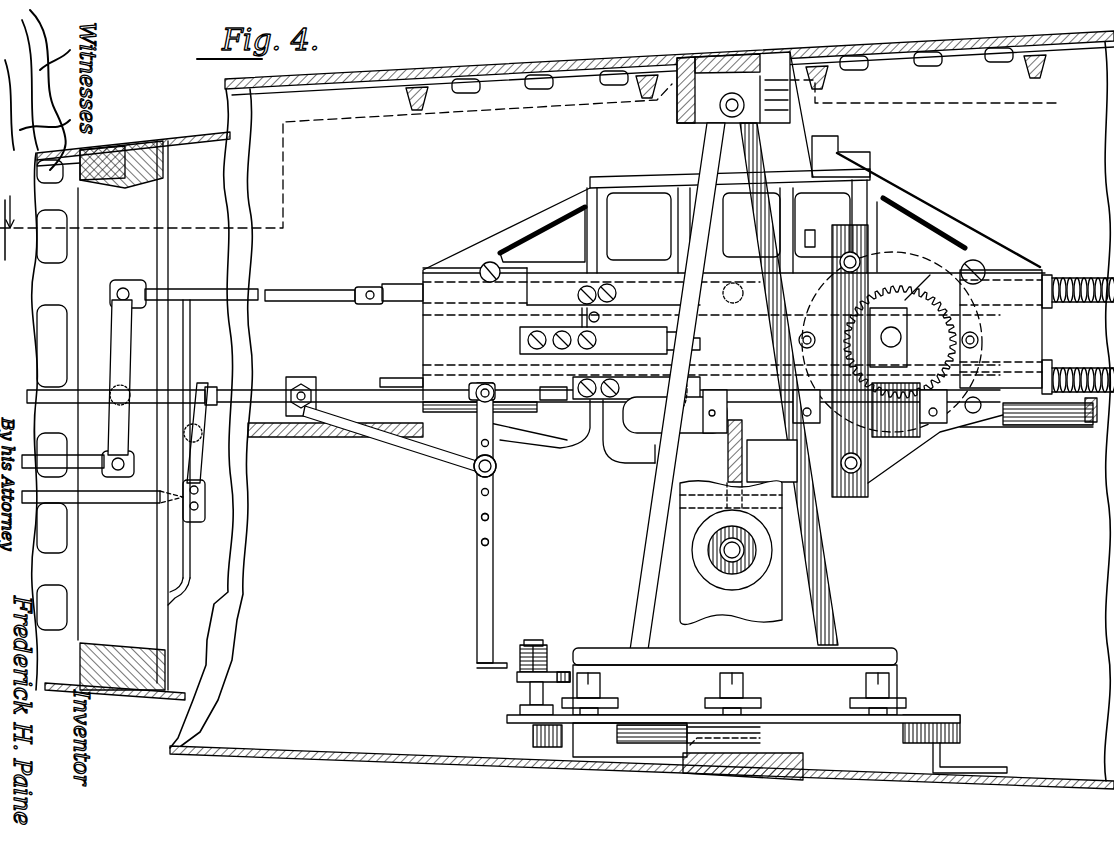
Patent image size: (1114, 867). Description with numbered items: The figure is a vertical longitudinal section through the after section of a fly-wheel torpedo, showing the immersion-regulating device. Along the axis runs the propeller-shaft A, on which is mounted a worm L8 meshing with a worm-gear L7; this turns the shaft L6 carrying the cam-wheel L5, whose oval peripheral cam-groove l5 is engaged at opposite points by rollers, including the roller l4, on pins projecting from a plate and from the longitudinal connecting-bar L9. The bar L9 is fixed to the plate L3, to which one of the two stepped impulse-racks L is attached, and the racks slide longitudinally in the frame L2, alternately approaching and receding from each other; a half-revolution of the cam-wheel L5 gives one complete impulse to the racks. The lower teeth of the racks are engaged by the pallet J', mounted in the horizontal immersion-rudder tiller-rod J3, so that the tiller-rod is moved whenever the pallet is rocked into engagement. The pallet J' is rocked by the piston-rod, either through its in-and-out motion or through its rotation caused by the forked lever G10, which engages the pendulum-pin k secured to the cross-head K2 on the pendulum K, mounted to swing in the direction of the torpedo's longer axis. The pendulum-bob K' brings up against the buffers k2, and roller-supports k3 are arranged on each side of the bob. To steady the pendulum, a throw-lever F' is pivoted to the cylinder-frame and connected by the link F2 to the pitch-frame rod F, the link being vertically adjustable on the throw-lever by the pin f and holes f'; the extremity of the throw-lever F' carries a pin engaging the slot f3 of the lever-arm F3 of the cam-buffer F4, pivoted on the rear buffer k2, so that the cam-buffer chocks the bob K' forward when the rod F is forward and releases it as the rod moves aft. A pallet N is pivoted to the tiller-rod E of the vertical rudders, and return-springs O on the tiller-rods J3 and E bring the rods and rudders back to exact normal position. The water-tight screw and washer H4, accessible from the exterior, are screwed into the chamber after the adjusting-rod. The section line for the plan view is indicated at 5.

The housing outline 5 is at (1055, 70).
The tiller-rod E is at (88, 454).
The pitch-frame rod F is at (211, 377).
The link F2 is at (422, 443).
The throw-lever F' is at (499, 525).
The pin f is at (500, 474).
The holes f' is at (476, 534).
The lever-arm F3 is at (530, 646).
The slot f3 is at (545, 648).
The cam-buffer F4 is at (516, 675).
The horizontal immersion-rudder tiller-rod J3 is at (1075, 362).
The pallet J' is at (723, 419).
The propeller-shaft A is at (287, 424).
The pallet N is at (734, 268).
The stepped impulse-rack L is at (590, 290).
The frame L2 is at (705, 334).
The plate L3 is at (848, 356).
The cam-wheel L5 is at (897, 284).
The shaft L6 is at (920, 293).
The worm-gear L7 is at (912, 310).
The roller l4 is at (978, 341).
The cam-groove l5 is at (1008, 300).
The worm L8 is at (910, 432).
The longitudinal connecting-bar L9 is at (711, 328).
The return-springs O is at (1078, 285).
The forked lever G10 is at (770, 406).
The pendulum K is at (750, 386).
The cross-head K2 is at (672, 430).
The pendulum-bob K' is at (735, 681).
The pendulum-pin k is at (903, 703).
The buffers k2 is at (507, 718).
The roller-supports k3 is at (612, 690).
The water-tight screw and washer H4 is at (736, 568).